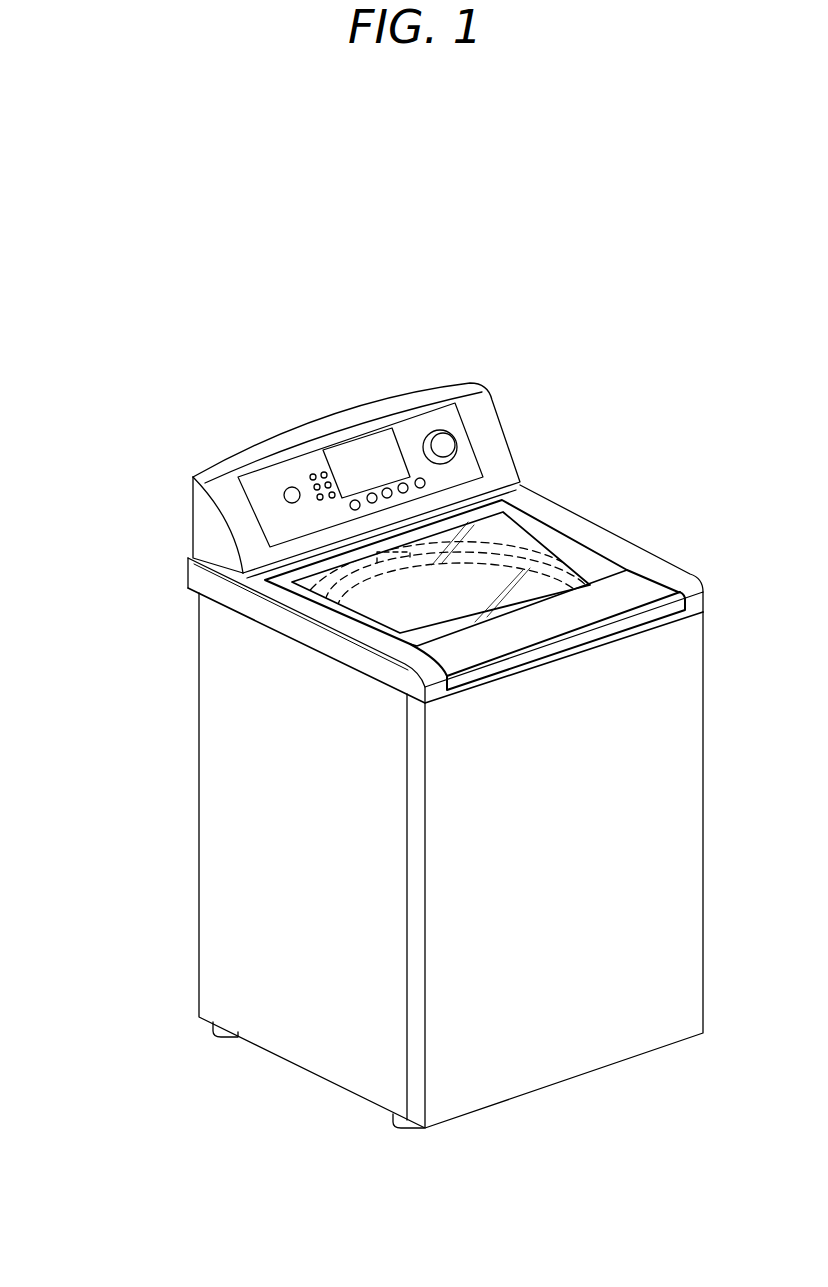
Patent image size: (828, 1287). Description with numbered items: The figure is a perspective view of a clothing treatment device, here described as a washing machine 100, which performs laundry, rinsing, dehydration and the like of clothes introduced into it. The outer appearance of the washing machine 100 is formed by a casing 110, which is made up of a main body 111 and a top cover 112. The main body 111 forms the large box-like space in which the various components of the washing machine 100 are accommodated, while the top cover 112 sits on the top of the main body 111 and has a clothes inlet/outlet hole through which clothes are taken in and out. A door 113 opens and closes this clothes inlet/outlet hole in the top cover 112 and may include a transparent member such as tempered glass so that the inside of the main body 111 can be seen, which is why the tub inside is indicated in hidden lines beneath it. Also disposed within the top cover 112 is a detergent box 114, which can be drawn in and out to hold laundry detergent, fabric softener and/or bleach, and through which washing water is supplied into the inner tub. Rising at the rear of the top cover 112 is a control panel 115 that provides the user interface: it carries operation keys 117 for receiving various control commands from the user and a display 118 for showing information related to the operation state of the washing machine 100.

The washing machine 100 is at (147, 364).
The casing 110 is at (90, 572).
The main body 111 is at (220, 725).
The top cover 112 is at (200, 577).
The door 113 is at (582, 553).
The detergent box 114 is at (405, 541).
The control panel 115 is at (303, 320).
The operation keys 117 is at (440, 442).
The display 118 is at (357, 468).